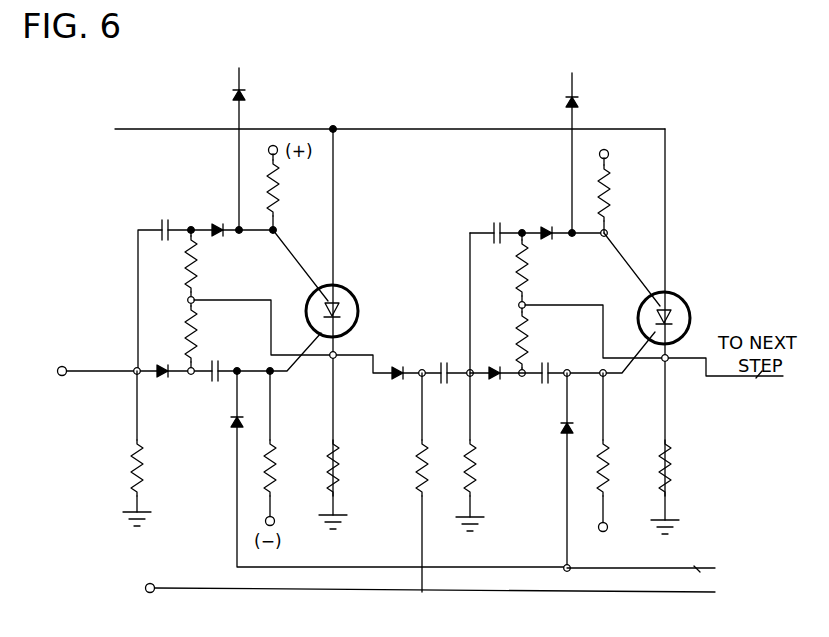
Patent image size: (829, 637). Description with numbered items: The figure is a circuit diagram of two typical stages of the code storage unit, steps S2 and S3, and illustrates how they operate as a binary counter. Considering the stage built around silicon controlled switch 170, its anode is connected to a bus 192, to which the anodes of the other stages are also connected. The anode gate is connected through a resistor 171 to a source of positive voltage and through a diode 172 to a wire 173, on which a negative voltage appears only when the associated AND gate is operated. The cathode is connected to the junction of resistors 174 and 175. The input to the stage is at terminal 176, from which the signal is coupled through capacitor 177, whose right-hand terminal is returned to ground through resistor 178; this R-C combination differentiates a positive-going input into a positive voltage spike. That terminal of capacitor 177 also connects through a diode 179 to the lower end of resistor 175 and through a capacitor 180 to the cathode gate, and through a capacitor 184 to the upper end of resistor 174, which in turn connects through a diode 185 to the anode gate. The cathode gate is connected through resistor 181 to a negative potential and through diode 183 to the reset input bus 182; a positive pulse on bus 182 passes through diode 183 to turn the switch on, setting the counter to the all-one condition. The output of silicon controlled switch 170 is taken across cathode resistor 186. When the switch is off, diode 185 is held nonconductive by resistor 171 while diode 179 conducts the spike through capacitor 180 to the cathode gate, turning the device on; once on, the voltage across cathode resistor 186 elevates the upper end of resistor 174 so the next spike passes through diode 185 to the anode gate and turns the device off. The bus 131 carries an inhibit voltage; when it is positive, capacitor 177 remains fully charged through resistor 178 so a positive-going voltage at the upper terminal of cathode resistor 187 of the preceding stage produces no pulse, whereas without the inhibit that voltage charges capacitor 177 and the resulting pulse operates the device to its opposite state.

The bus 131 is at (307, 591).
The silicon controlled switch 170 is at (675, 292).
The resistor 171 is at (611, 195).
The diode 172 is at (577, 105).
The wire 173 is at (577, 79).
The resistor 174 is at (528, 278).
The resistor 175 is at (528, 347).
The input terminal 176 is at (423, 369).
The capacitor 177 is at (448, 385).
The resistor 178 is at (477, 479).
The diode 179 is at (492, 382).
The capacitor 180 is at (543, 384).
The resistor 181 is at (609, 482).
The reset input bus 182 is at (503, 562).
The diode 183 is at (563, 434).
The capacitor 184 is at (492, 228).
The diode 185 is at (547, 228).
The cathode resistor 186 is at (671, 482).
The cathode resistor 187 is at (339, 478).
The bus 192 is at (449, 130).
The step S2 is at (364, 293).
The step S3 is at (690, 311).